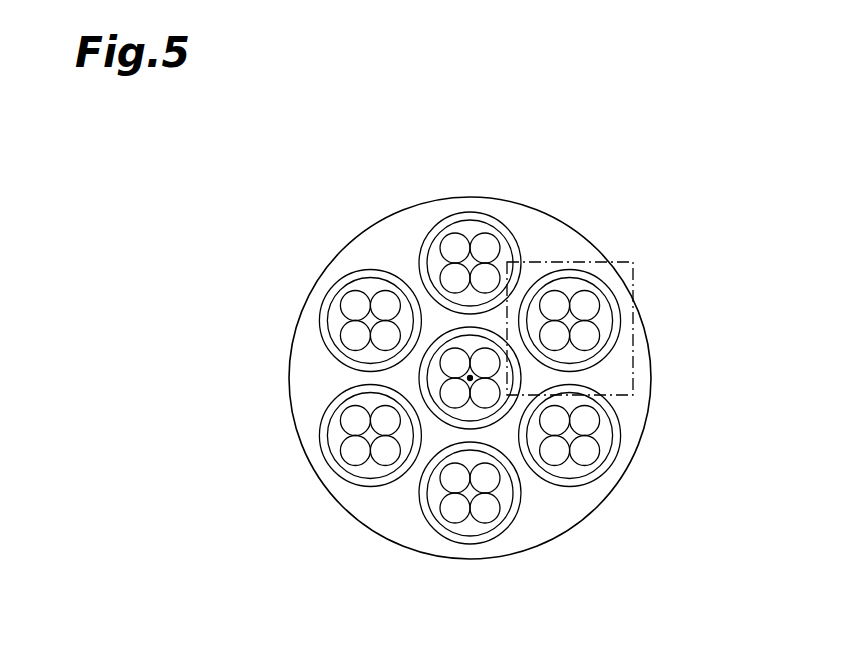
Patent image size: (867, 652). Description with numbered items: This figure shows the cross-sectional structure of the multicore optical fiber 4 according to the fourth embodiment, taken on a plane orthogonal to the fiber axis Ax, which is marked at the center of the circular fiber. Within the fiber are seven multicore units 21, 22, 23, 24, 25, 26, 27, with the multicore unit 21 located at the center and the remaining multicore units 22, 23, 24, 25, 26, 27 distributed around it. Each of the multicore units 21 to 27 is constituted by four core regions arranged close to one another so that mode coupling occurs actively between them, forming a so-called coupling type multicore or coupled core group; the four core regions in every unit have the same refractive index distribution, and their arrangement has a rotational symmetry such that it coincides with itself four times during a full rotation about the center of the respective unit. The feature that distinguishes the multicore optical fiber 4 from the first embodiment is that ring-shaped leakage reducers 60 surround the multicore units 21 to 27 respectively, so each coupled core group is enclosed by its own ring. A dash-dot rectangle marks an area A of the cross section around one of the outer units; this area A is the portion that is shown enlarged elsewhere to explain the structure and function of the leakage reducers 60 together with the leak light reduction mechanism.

The multicore optical fiber 4 is at (474, 354).
The multicore unit 21 is at (443, 370).
The multicore unit 22 is at (352, 287).
The multicore unit 23 is at (485, 230).
The multicore unit 24 is at (588, 292).
The multicore unit 25 is at (588, 468).
The multicore unit 26 is at (453, 523).
The multicore unit 27 is at (348, 465).
The leakage reducer 60 is at (322, 438).
The axis Ax is at (470, 378).
The area A is at (635, 283).